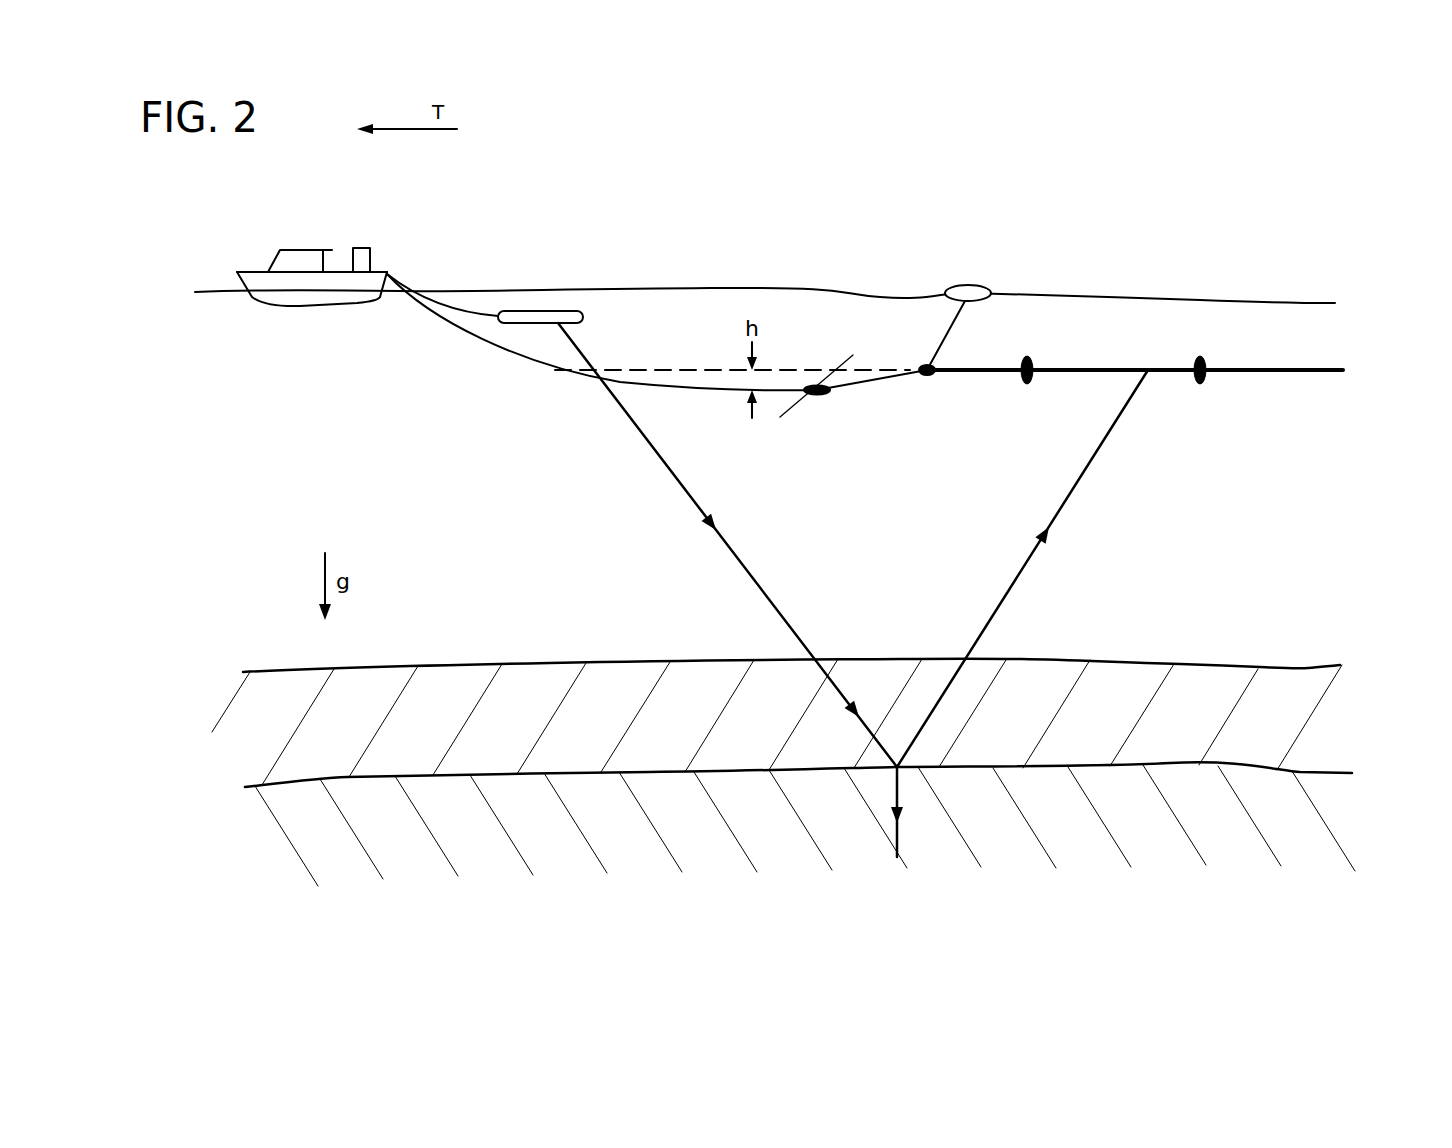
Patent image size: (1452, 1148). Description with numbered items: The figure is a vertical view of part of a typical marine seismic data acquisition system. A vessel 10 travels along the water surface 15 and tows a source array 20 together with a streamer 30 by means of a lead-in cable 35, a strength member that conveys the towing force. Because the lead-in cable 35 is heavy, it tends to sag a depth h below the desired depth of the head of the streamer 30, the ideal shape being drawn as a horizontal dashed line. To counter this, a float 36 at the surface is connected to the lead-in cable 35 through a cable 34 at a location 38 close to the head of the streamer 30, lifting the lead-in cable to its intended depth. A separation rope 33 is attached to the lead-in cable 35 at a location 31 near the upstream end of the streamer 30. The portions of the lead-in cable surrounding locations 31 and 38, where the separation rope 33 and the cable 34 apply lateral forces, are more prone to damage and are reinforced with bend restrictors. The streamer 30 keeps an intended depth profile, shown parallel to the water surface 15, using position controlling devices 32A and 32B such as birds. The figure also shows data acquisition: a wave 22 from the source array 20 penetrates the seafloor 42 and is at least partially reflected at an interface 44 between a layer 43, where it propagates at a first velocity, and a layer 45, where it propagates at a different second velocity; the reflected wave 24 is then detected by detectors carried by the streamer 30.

The vessel 10 is at (252, 272).
The water surface 15 is at (708, 288).
The source array 20 is at (527, 310).
The wave 22 is at (740, 565).
The reflected wave 24 is at (1018, 577).
The streamer 30 is at (1305, 377).
The location 31 is at (822, 393).
The position controlling device 32A is at (1033, 362).
The position controlling device 32B is at (1207, 360).
The separation rope 33 is at (842, 363).
The cable 34 is at (951, 329).
The lead-in cable 35 is at (527, 370).
The float 36 is at (967, 290).
The location 38 is at (925, 375).
The seafloor 42 is at (1185, 663).
The layer 43 is at (1285, 712).
The interface 44 is at (1307, 772).
The layer 45 is at (1292, 818).